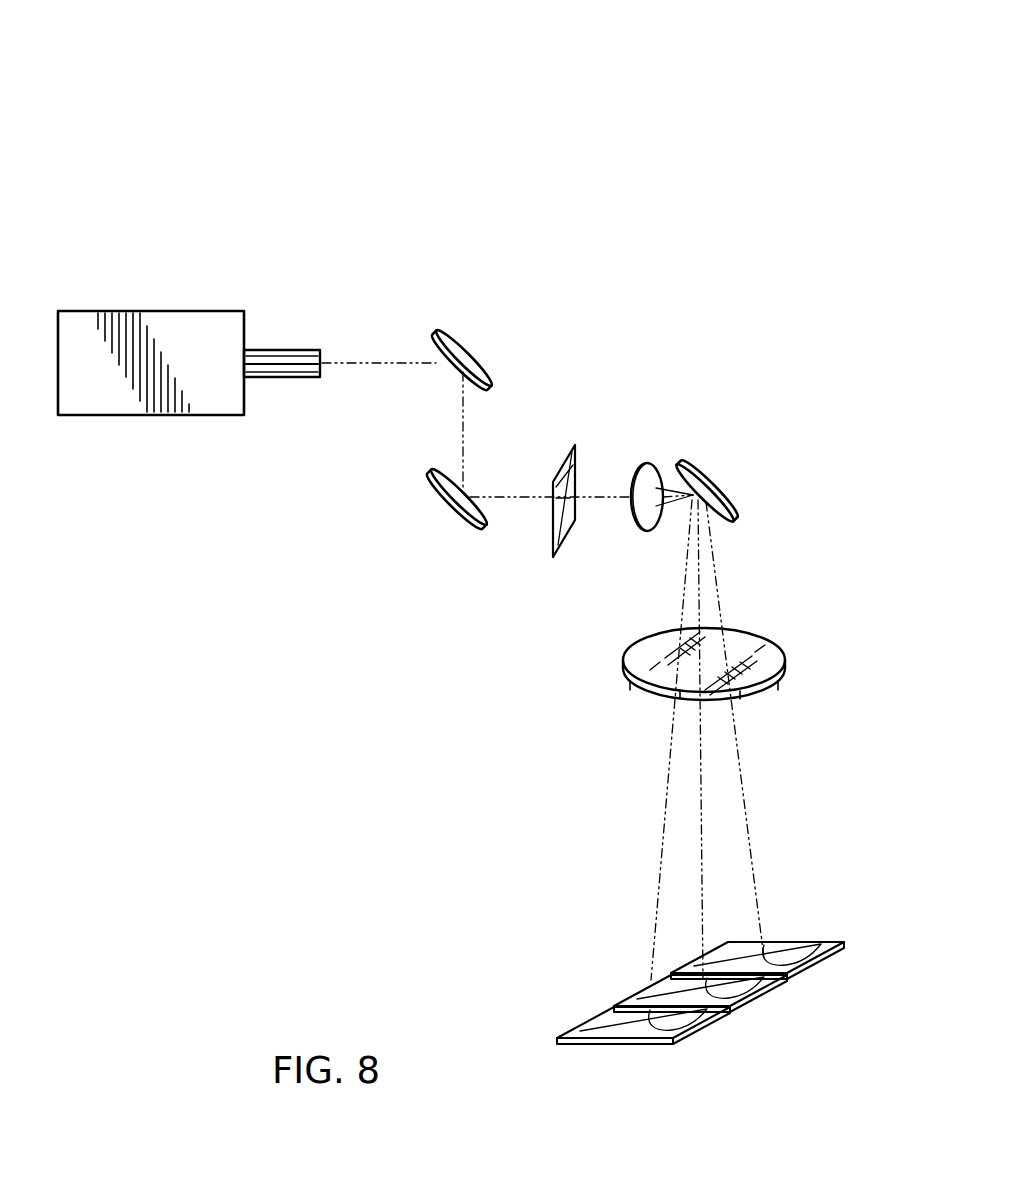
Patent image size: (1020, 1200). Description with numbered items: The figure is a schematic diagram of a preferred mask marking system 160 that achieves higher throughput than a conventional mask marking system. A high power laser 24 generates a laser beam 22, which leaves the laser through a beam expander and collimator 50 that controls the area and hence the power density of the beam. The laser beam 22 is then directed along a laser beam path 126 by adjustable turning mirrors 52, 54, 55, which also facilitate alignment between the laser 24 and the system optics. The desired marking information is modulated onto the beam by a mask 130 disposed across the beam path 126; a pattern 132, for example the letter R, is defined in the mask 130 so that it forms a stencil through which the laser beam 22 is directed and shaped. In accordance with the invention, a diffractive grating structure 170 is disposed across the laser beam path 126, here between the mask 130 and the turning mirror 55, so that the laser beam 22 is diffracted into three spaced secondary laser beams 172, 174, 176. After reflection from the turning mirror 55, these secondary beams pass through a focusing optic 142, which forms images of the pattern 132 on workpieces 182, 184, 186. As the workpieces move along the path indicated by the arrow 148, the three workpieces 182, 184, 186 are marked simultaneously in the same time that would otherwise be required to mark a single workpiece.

The mask marking system 160 is at (430, 152).
The high power laser 24 is at (107, 398).
The beam expander and collimator 50 is at (285, 362).
The laser beam 22 is at (393, 362).
The turning mirror 52 is at (458, 328).
The laser beam path 126 is at (463, 431).
The turning mirror 54 is at (473, 528).
The mask 130 is at (572, 445).
The pattern 132 is at (573, 478).
The diffractive grating structure 170 is at (646, 535).
The turning mirror 55 is at (687, 462).
The focusing optic 142 is at (773, 660).
The secondary laser beam 172 is at (663, 740).
The secondary laser beam 174 is at (702, 739).
The secondary laser beam 176 is at (739, 730).
The arrow 148 is at (630, 983).
The workpiece 182 is at (730, 1008).
The workpiece 184 is at (787, 973).
The workpiece 186 is at (842, 945).